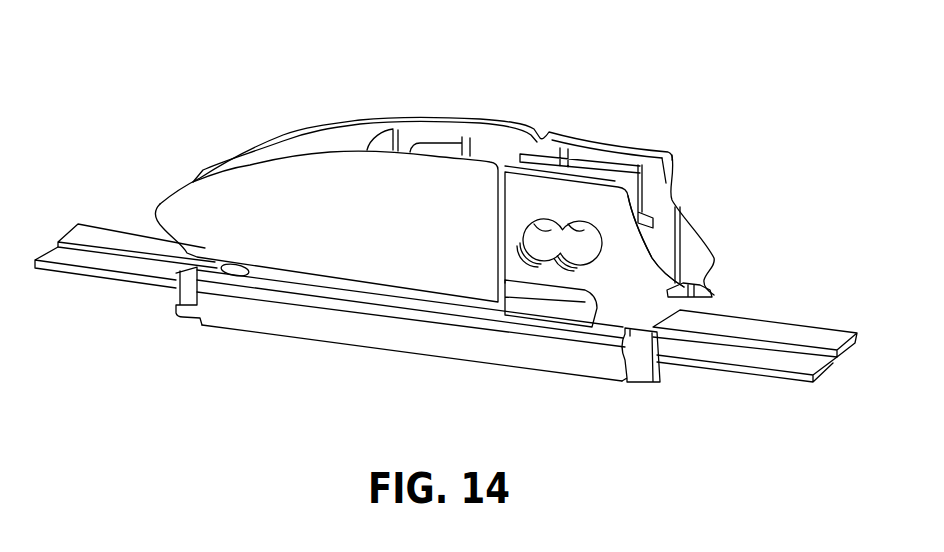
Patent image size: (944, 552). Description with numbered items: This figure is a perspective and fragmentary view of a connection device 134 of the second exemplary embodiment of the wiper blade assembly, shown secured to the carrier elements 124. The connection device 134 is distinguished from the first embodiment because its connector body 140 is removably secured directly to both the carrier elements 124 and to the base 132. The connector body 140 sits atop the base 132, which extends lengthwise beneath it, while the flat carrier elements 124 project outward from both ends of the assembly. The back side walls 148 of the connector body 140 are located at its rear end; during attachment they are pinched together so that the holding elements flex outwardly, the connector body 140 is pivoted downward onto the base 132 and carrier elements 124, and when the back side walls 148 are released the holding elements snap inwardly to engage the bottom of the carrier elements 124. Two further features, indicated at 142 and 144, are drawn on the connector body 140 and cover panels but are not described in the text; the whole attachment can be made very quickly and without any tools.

The carrier elements 124 is at (773, 327).
The base 132 is at (301, 338).
The connection device 134 is at (453, 186).
The connector body 140 is at (289, 130).
The opening between cover sections 142 is at (515, 154).
The side cover panels 144 is at (355, 118).
The back side walls 148 is at (636, 266).